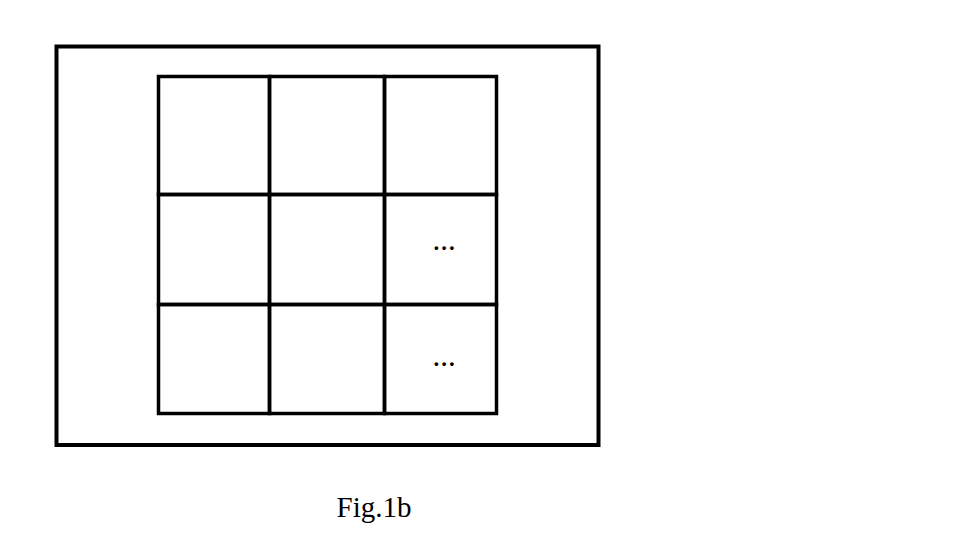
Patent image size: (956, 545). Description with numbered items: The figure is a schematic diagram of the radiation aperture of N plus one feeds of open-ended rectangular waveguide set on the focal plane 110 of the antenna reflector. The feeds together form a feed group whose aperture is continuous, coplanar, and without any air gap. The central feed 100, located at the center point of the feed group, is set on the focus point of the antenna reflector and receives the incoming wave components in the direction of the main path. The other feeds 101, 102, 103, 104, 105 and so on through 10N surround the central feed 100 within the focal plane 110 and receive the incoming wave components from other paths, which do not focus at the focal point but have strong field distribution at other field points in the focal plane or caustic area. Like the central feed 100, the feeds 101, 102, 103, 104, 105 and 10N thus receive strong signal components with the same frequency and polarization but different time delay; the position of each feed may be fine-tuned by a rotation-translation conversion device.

The focal plane 110 is at (599, 120).
The central feed 100 is at (327, 250).
The feed 101 is at (327, 136).
The feed 102 is at (327, 359).
The feed 103 is at (214, 359).
The feed 104 is at (214, 250).
The feed 105 is at (214, 136).
The feed 10N is at (441, 136).